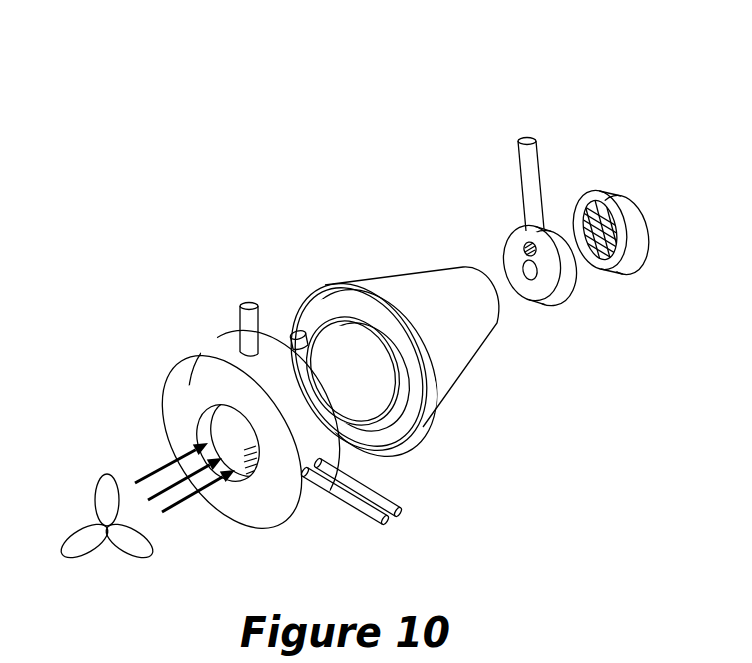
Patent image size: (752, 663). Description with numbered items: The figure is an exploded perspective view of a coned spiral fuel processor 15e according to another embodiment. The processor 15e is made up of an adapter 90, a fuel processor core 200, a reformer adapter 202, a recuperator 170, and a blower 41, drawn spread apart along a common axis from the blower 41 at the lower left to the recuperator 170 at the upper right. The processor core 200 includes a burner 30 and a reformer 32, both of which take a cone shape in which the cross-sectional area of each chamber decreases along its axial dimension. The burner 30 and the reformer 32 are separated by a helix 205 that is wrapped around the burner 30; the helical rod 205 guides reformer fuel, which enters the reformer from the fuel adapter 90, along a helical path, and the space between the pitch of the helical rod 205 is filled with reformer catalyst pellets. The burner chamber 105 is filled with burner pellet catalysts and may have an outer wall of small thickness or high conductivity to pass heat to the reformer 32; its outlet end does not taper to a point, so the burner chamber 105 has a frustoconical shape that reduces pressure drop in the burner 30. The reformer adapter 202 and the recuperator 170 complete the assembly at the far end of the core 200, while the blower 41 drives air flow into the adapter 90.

The coned spiral fuel processor 15e is at (155, 63).
The adapter 90 is at (236, 404).
The helix 205 is at (293, 332).
The burner 30 is at (322, 303).
The reformer 32 is at (357, 313).
The burner chamber 105 is at (370, 377).
The fuel processor core 200 is at (353, 299).
The reformer adapter 202 is at (440, 208).
The recuperator 170 is at (522, 169).
The blower 41 is at (63, 547).